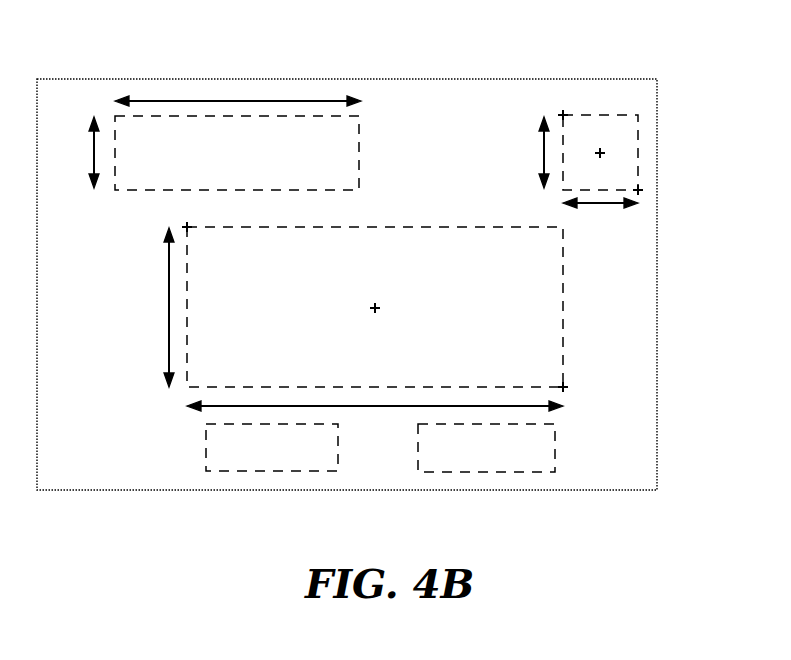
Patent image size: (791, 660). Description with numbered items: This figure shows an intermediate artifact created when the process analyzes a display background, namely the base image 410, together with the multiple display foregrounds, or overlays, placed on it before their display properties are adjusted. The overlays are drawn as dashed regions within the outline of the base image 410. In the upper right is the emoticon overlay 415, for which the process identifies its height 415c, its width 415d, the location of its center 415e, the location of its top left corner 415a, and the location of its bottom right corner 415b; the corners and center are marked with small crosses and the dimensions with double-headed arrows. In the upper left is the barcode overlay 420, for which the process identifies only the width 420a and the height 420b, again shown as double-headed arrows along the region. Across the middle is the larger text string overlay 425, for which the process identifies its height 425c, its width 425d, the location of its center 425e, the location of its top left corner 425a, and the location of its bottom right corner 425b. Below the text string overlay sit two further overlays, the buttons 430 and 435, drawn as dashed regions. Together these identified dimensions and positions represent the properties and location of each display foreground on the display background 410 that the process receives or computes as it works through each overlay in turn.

The display background 410 is at (423, 79).
The emoticon overlay 415 is at (640, 131).
The location of top left corner 415a is at (563, 115).
The location of bottom right corner 415b is at (638, 190).
The height 415c is at (522, 152).
The width 415d is at (600, 215).
The location of center 415e is at (600, 153).
The barcode overlay 420 is at (237, 153).
The width 420a is at (238, 92).
The height 420b is at (72, 152).
The text string overlay 425 is at (565, 286).
The location of top left corner 425a is at (187, 227).
The location of bottom right corner 425b is at (563, 387).
The height 425c is at (147, 307).
The width 425d is at (375, 416).
The location of center 425e is at (378, 306).
The button 430 is at (272, 447).
The button 435 is at (486, 448).